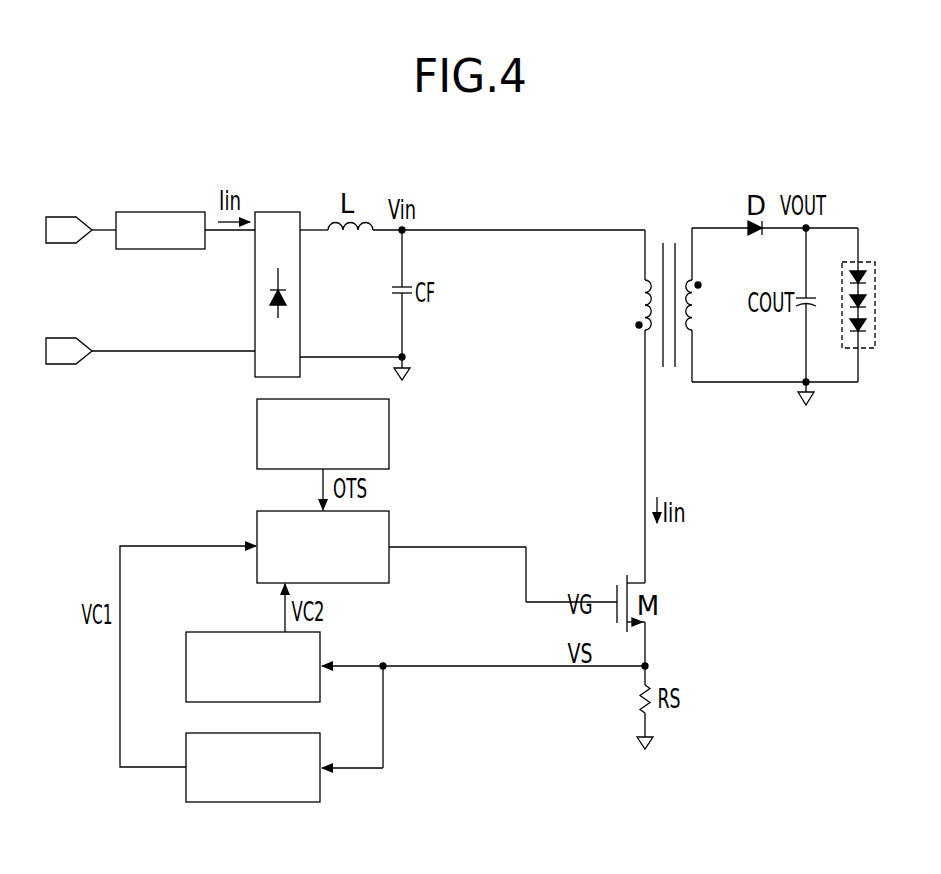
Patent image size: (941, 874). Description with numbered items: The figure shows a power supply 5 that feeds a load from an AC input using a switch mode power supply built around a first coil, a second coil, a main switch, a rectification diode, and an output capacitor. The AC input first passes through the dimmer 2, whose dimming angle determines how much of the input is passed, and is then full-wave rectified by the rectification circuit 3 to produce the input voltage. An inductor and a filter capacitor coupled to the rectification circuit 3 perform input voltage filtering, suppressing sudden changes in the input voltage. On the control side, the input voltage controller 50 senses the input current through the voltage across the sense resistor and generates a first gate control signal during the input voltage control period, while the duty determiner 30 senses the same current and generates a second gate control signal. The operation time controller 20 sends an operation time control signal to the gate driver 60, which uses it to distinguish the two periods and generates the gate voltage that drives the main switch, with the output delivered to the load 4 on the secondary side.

The dimmer 2 is at (172, 212).
The rectification circuit 3 is at (280, 212).
The light emitting unit (LED array) 4 is at (875, 301).
The power supply 5 is at (594, 156).
The operation time controller 20 is at (389, 434).
The duty determiner 30 is at (186, 666).
The input voltage controller 50 is at (186, 791).
The gate driver 60 is at (389, 518).